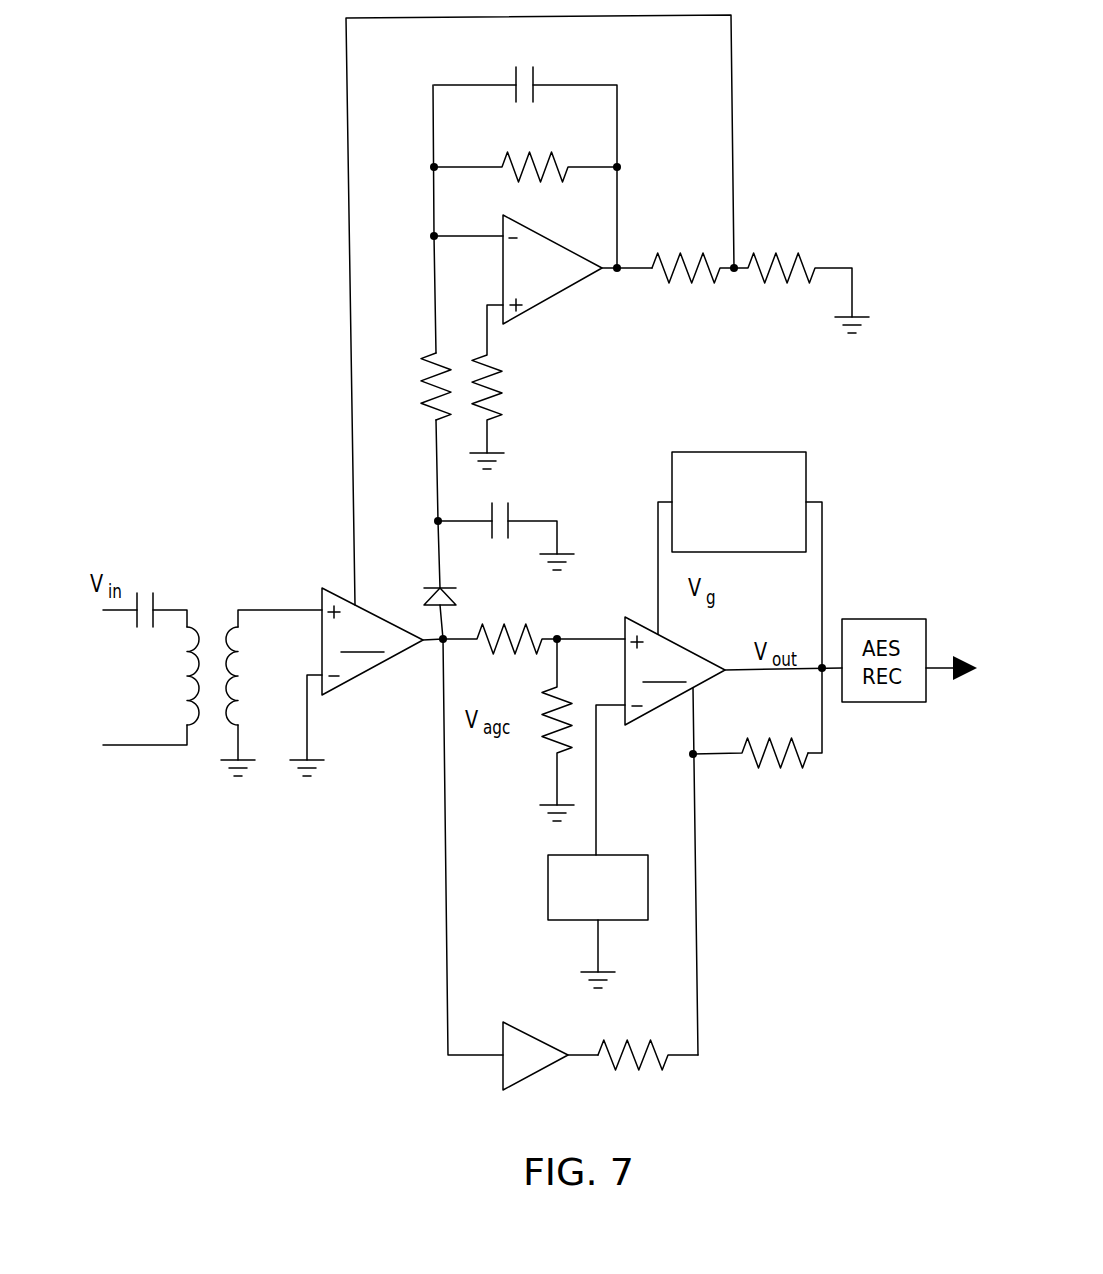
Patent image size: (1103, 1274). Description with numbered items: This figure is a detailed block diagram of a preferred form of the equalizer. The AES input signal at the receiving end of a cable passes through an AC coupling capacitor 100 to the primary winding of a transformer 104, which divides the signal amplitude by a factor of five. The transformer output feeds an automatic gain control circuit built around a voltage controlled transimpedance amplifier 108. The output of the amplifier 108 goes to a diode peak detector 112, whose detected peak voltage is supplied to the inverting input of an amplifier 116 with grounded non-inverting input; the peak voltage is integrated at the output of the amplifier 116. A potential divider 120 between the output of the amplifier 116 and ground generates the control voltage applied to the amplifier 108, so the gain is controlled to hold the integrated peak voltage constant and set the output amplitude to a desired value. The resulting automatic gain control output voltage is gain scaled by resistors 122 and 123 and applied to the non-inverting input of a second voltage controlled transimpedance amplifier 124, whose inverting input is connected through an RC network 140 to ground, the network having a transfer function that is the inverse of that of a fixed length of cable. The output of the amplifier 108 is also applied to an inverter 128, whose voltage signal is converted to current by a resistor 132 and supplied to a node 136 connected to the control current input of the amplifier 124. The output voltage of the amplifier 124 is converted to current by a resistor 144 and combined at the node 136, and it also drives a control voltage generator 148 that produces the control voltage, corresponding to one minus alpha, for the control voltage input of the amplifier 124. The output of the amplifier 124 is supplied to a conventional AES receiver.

The AC coupling capacitor 100 is at (168, 580).
The transformer 104 is at (218, 595).
The voltage controlled transimpedance amplifier 108 is at (377, 692).
The diode peak detector 112 is at (571, 488).
The amplifier 116 is at (573, 307).
The potential divider 120 is at (712, 319).
The resistor 122 is at (542, 612).
The resistor 123 is at (547, 750).
The second voltage controlled transimpedance amplifier 124 is at (688, 633).
The inverter 128 is at (552, 1025).
The resistor 132 is at (620, 1083).
The node 136 is at (710, 703).
The RC network 140 is at (637, 935).
The resistor 144 is at (802, 787).
The control voltage generator 148 is at (803, 435).